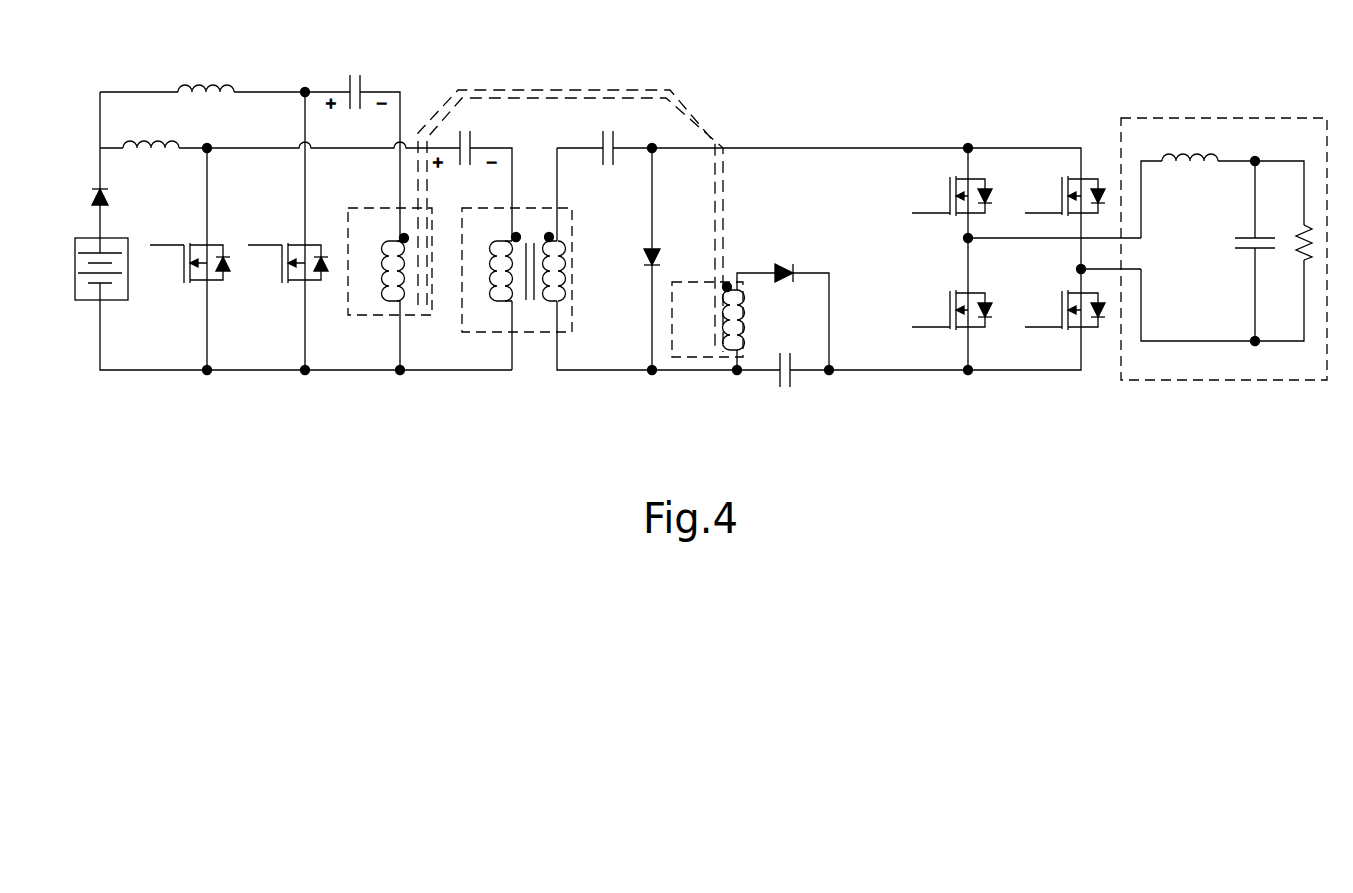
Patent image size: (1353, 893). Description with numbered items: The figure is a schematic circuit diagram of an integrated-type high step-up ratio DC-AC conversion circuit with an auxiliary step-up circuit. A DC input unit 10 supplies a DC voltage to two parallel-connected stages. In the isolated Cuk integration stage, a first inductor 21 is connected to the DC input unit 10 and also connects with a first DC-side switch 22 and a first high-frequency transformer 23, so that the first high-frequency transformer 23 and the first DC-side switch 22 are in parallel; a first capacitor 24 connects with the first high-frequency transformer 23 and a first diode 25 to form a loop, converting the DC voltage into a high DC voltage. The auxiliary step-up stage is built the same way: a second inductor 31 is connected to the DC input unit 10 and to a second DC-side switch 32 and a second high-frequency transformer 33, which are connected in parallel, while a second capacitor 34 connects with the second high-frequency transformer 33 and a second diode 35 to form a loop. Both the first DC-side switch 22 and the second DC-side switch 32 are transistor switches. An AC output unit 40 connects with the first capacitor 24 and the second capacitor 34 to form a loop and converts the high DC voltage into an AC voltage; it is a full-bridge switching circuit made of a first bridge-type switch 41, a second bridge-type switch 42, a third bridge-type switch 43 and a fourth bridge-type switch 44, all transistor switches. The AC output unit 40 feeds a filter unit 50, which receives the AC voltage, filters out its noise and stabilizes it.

The DC input unit 10 is at (75, 277).
The first inductor 21 is at (157, 147).
The first DC-side switch 22 is at (183, 262).
The first high-frequency transformer 23 is at (519, 210).
The first capacitor 24 is at (603, 170).
The first diode 25 is at (645, 262).
The second inductor 31 is at (203, 84).
The second DC-side switch 32 is at (281, 262).
The second high-frequency transformer 33 is at (350, 306).
The second capacitor 34 is at (790, 375).
The second diode 35 is at (780, 265).
The AC output unit 40 is at (1001, 182).
The first bridge-type switch 41 is at (948, 195).
The second bridge-type switch 42 is at (1060, 195).
The third bridge-type switch 43 is at (950, 308).
The fourth bridge-type switch 44 is at (1062, 308).
The filter unit 50 is at (1222, 118).